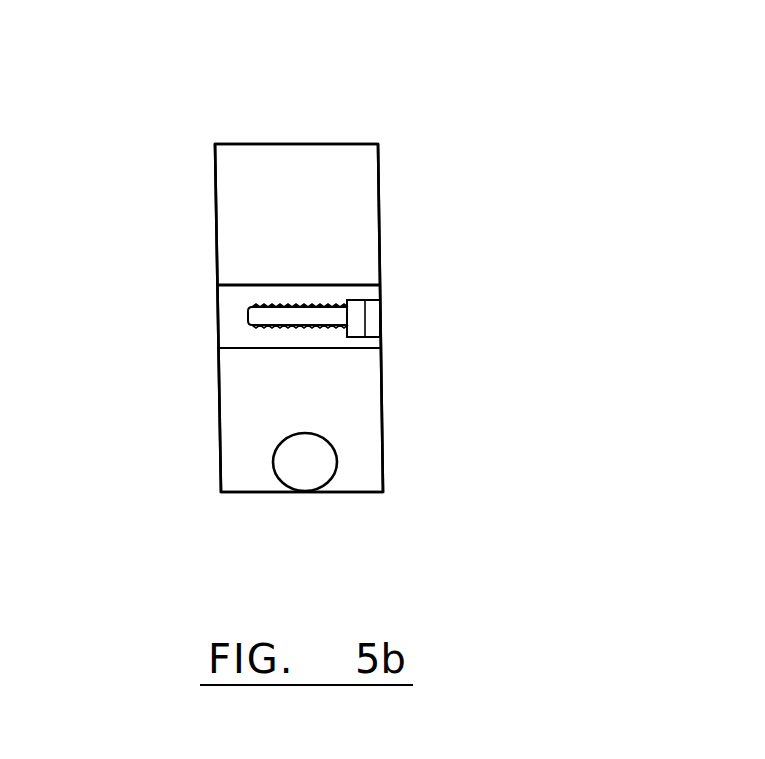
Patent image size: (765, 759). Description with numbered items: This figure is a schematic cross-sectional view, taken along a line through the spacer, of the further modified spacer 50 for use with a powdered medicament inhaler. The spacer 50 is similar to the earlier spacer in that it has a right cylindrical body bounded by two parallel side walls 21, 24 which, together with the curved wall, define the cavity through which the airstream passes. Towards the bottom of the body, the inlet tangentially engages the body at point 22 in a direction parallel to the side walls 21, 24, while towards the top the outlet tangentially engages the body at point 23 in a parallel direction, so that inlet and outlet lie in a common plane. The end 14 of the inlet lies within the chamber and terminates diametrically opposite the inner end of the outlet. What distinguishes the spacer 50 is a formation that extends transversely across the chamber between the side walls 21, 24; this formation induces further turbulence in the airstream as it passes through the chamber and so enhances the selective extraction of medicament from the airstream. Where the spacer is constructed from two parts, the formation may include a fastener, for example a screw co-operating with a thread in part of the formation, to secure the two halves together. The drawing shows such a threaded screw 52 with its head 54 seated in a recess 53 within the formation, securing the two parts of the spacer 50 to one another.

The further modified spacer 50 is at (405, 143).
The side wall 21 is at (217, 217).
The side wall 24 is at (380, 208).
The point of outlet engagement 23 is at (297, 143).
The point of inlet engagement 22 is at (307, 492).
The recess / slot 53 is at (338, 293).
The threaded screw shaft 52 is at (232, 323).
The screw head 54 is at (355, 317).
The end of inlet 14 is at (338, 463).